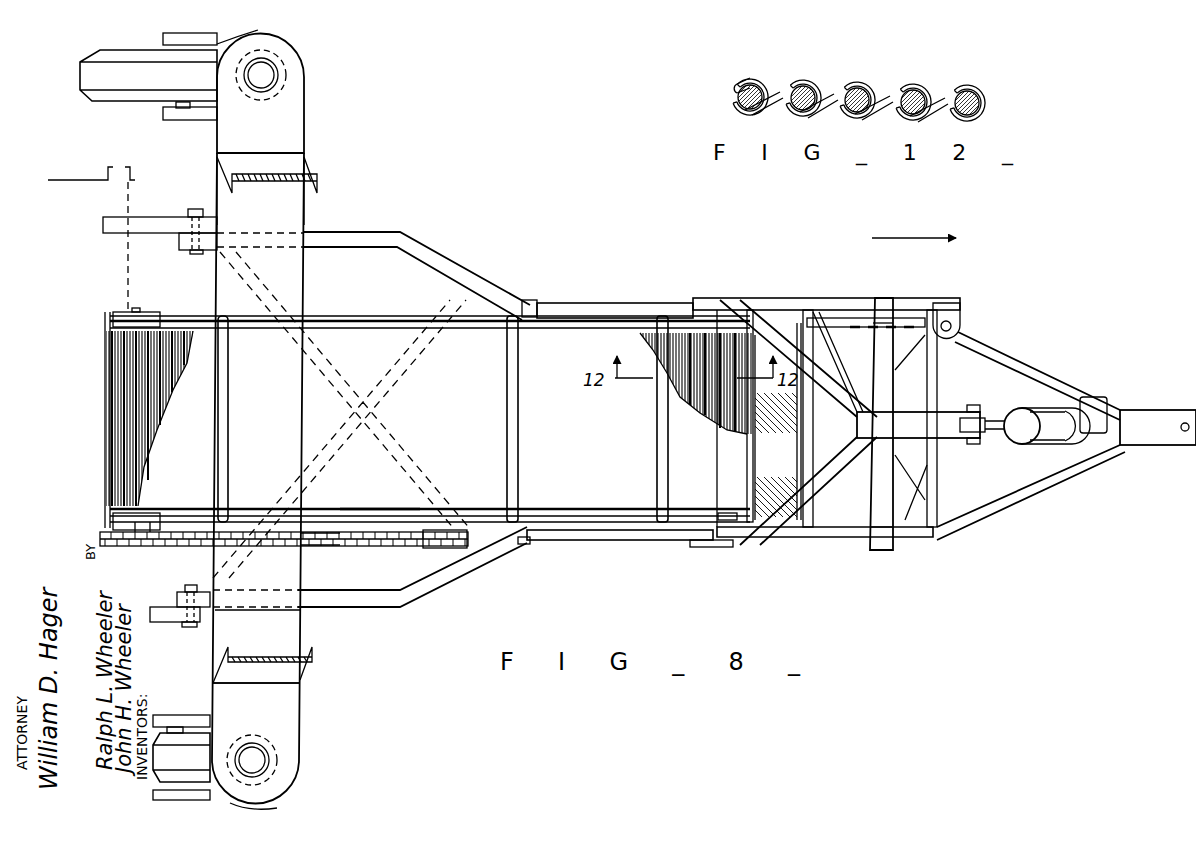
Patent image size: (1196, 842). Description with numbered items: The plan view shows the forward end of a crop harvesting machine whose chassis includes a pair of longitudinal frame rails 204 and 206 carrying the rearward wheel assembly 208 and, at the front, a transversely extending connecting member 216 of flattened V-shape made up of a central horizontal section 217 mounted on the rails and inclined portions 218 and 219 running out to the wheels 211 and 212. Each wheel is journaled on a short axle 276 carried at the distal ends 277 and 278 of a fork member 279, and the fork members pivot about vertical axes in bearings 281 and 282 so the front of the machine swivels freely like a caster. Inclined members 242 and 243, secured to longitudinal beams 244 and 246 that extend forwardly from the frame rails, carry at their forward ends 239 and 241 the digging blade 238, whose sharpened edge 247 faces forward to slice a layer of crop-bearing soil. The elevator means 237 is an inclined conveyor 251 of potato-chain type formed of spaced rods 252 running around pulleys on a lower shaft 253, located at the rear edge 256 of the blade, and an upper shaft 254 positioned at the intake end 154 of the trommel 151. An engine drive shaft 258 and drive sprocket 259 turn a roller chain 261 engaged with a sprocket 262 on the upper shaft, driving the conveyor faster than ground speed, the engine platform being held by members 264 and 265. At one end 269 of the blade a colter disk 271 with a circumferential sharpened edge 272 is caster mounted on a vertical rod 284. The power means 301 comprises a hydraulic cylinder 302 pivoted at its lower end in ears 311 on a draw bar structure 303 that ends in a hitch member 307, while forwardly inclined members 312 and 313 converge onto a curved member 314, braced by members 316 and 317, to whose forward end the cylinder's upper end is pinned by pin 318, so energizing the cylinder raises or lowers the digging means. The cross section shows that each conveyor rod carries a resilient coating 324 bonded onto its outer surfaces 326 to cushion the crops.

In FIG. 8, the trommel 151 is at (75, 177).
In FIG. 8, the intake end 154 is at (130, 195).
In FIG. 8, the longitudinal frame rail 204 is at (160, 615).
In FIG. 8, the longitudinal frame rail 206 is at (132, 236).
In FIG. 8, the rearward wheel assembly 208 is at (905, 240).
In FIG. 8, the wheel 211 is at (181, 757).
In FIG. 8, the wheel 212 is at (148, 75).
In FIG. 8, the connecting member 216 is at (297, 94).
In FIG. 8, the central horizontal section 217 is at (290, 292).
In FIG. 8, the inclined portion 218 is at (285, 714).
In FIG. 8, the inclined portion 219 is at (295, 212).
In FIG. 8, the elevator means 237 is at (694, 270).
In FIG. 8, the digging blade 238 is at (767, 473).
In FIG. 8, the forward end 239 is at (741, 327).
In FIG. 8, the forward end 241 is at (738, 518).
In FIG. 8, the inclined member 242 is at (375, 318).
In FIG. 8, the inclined member 243 is at (367, 523).
In FIG. 8, the longitudinal beam 244 is at (582, 304).
In FIG. 8, the longitudinal beam 246 is at (588, 540).
In FIG. 8, the sharpened edge 247 is at (800, 425).
In FIG. 8, the inclined conveyor 251 is at (102, 432).
In FIG. 8, the rods 252 is at (160, 417).
In FIG. 12, the rods 252 is at (809, 86).
In FIG. 8, the lower shaft 253 is at (728, 521).
In FIG. 8, the upper shaft 254 is at (135, 312).
In FIG. 8, the rear edge 256 is at (748, 450).
In FIG. 8, the drive shaft 258 is at (448, 529).
In FIG. 8, the drive sprocket 259 is at (447, 552).
In FIG. 8, the roller chain 261 is at (317, 547).
In FIG. 8, the sprocket 262 is at (153, 547).
In FIG. 8, the member 264 is at (527, 300).
In FIG. 8, the member 265 is at (310, 170).
In FIG. 8, the end 269 is at (790, 325).
In FIG. 8, the colter disk 271 is at (833, 320).
In FIG. 8, the circumferential sharpened edge 272 is at (914, 323).
In FIG. 8, the axle 276 is at (183, 110).
In FIG. 8, the distal end 277 is at (163, 40).
In FIG. 8, the distal end 278 is at (163, 115).
In FIG. 8, the fork member 279 is at (258, 30).
In FIG. 8, the bearing 281 is at (280, 74).
In FIG. 8, the bearing 282 is at (275, 758).
In FIG. 8, the vertical rod 284 is at (951, 325).
In FIG. 8, the power means 301 is at (1100, 367).
In FIG. 8, the hydraulic cylinder 302 is at (1040, 414).
In FIG. 8, the draw bar structure 303 is at (1034, 493).
In FIG. 8, the hitch member 307 is at (1180, 446).
In FIG. 8, the ears 311 is at (1092, 405).
In FIG. 8, the forwardly inclined member 312 is at (843, 393).
In FIG. 8, the forwardly inclined member 313 is at (842, 456).
In FIG. 8, the curved member 314 is at (918, 425).
In FIG. 8, the brace member 316 is at (887, 310).
In FIG. 8, the brace member 317 is at (880, 528).
In FIG. 8, the pin 318 is at (990, 376).
In FIG. 12, the resilient coating 324 is at (859, 92).
In FIG. 12, the outer surfaces 326 is at (847, 110).